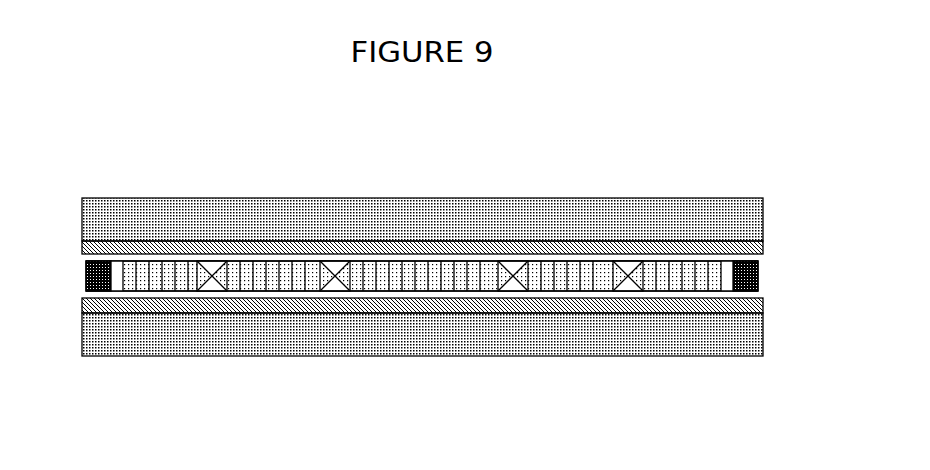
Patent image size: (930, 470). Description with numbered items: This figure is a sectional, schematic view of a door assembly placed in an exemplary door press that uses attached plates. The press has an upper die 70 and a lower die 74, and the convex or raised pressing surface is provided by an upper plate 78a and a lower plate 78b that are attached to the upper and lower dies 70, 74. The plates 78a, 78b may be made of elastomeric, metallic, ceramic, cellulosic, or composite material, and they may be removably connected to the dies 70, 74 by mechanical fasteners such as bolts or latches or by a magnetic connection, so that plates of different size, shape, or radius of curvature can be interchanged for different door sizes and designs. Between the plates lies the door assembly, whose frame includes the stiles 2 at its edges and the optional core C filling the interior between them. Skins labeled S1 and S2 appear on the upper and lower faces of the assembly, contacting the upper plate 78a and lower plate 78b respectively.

The upper die 70 is at (146, 195).
The lower die 74 is at (633, 323).
The upper plate 78a is at (399, 240).
The lower plate 78b is at (407, 293).
The stile 2 is at (80, 255).
The first surface S1 is at (585, 250).
The second surface S2 is at (205, 288).
The core C is at (568, 272).